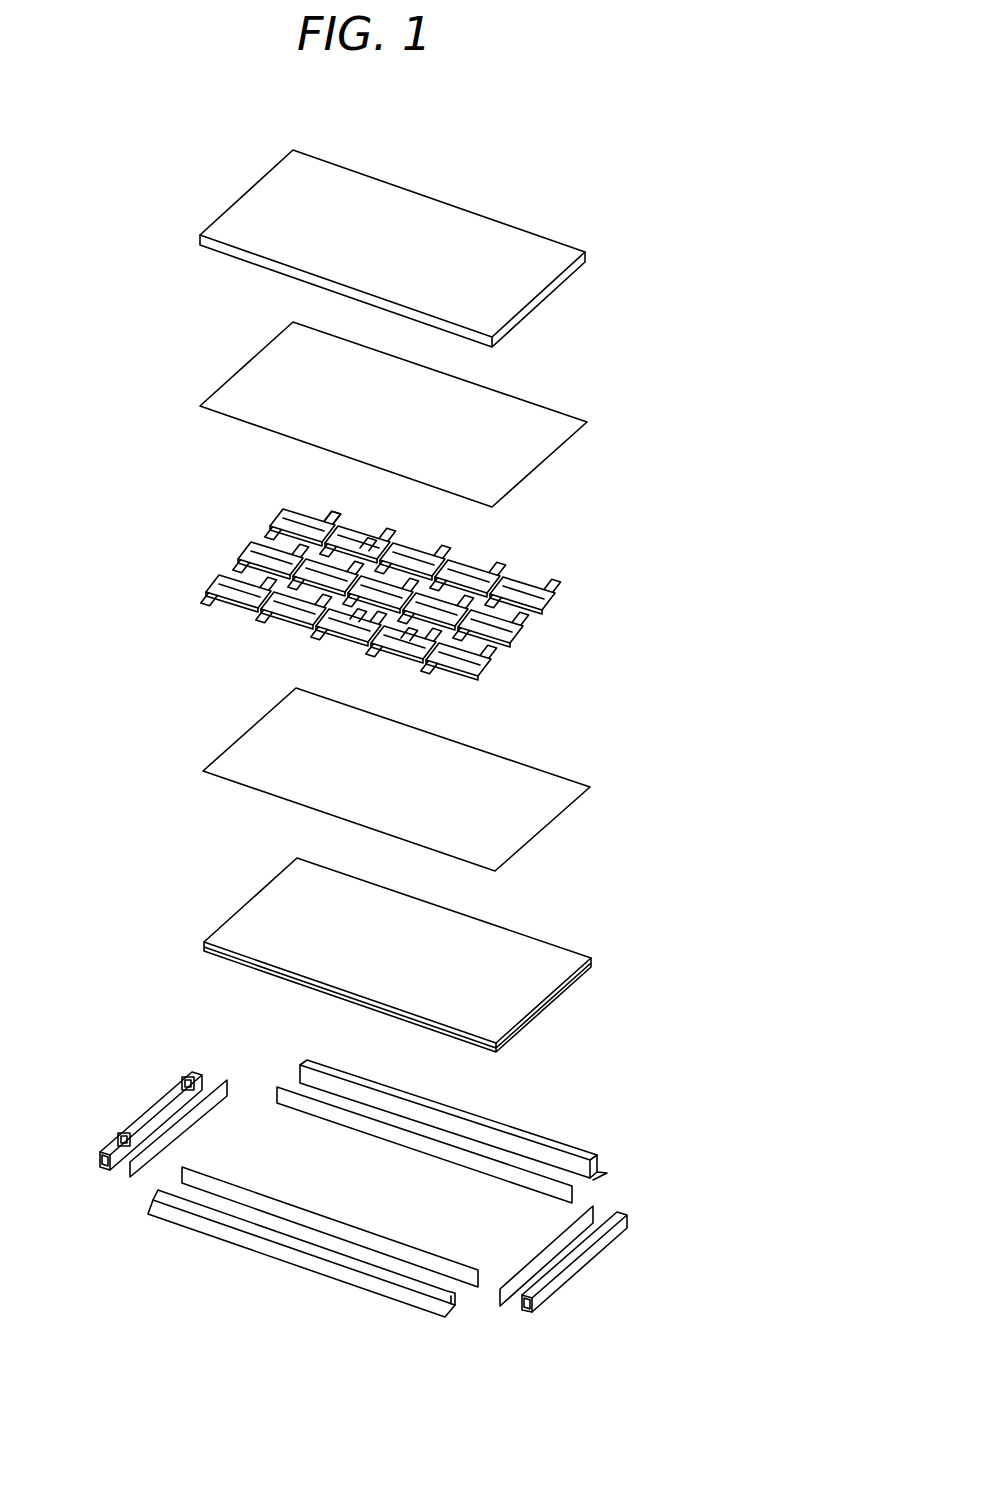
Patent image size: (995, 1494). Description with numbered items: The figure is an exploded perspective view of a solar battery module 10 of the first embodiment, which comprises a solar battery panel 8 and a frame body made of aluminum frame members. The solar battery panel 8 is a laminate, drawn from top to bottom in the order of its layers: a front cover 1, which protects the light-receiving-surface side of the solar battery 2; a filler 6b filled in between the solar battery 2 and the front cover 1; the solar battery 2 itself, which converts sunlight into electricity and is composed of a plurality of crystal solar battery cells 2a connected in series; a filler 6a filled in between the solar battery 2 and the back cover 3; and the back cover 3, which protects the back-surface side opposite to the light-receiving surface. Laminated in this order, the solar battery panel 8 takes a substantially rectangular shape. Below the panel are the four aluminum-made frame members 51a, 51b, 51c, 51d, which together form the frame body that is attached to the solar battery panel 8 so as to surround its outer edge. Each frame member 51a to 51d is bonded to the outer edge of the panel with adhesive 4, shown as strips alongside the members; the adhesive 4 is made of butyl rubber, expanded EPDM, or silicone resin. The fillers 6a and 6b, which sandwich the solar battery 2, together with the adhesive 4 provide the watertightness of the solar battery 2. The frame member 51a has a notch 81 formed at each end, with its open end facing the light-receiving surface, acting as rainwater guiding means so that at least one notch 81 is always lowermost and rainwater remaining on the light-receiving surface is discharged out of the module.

The solar battery module 10 is at (572, 163).
The solar battery panel 8 is at (153, 138).
The front cover 1 is at (258, 200).
The filler 6b is at (262, 370).
The solar battery 2 is at (256, 552).
The solar battery cells 2a is at (366, 545).
The filler 6a is at (265, 725).
The back cover 3 is at (268, 908).
The adhesive 4 is at (275, 1090).
The frame member 51a is at (152, 1105).
The frame member 51b is at (305, 1243).
The frame member 51c is at (612, 1238).
The frame member 51d is at (547, 1135).
The notch 81 is at (186, 1080).